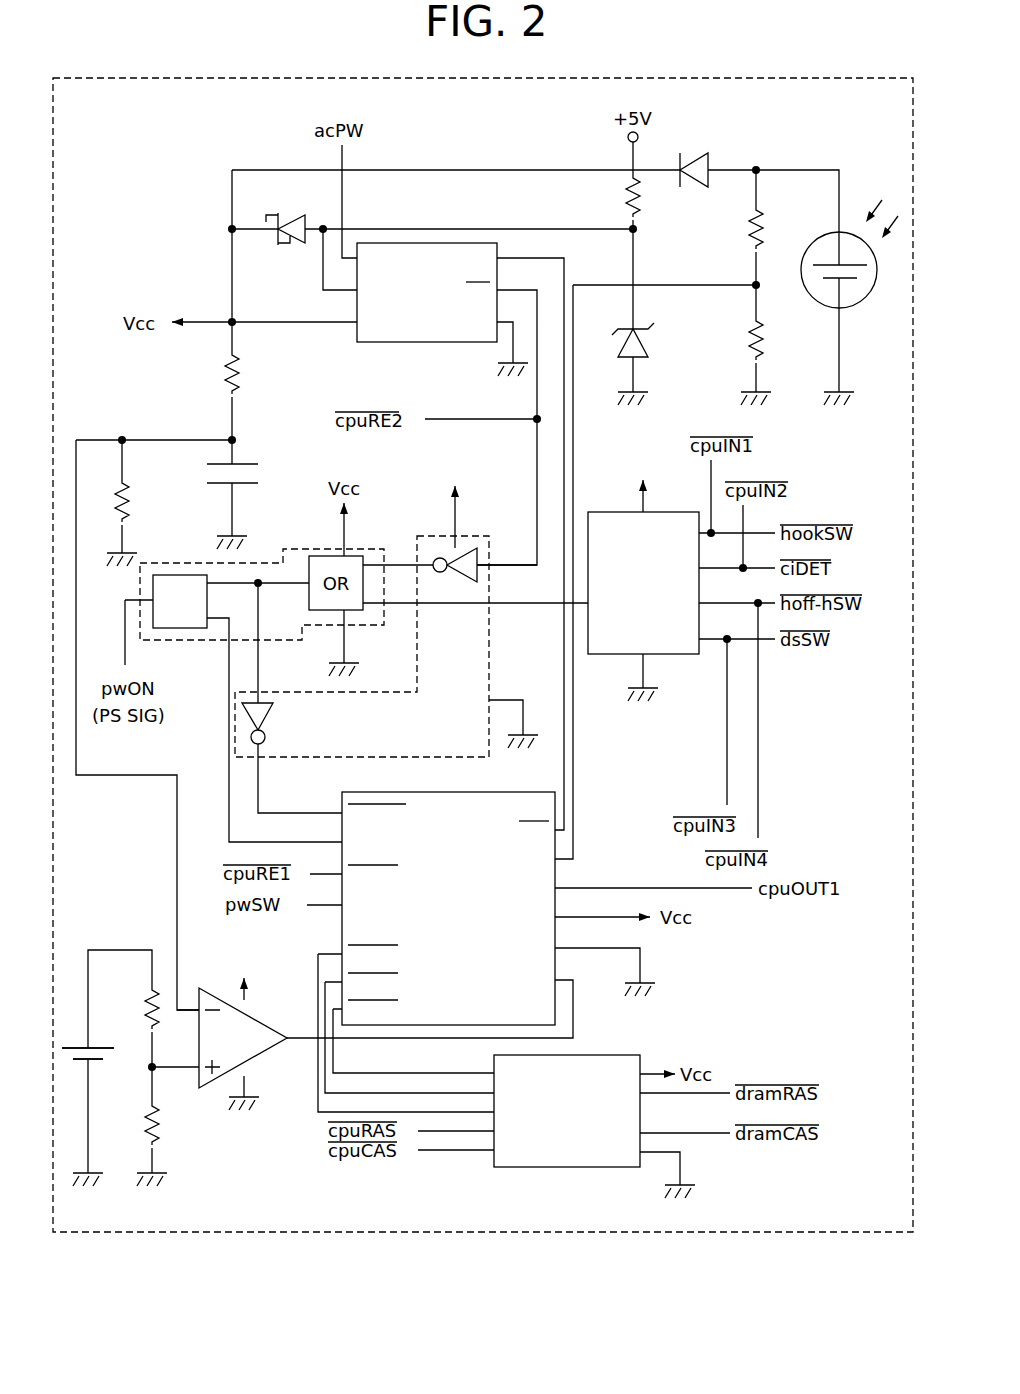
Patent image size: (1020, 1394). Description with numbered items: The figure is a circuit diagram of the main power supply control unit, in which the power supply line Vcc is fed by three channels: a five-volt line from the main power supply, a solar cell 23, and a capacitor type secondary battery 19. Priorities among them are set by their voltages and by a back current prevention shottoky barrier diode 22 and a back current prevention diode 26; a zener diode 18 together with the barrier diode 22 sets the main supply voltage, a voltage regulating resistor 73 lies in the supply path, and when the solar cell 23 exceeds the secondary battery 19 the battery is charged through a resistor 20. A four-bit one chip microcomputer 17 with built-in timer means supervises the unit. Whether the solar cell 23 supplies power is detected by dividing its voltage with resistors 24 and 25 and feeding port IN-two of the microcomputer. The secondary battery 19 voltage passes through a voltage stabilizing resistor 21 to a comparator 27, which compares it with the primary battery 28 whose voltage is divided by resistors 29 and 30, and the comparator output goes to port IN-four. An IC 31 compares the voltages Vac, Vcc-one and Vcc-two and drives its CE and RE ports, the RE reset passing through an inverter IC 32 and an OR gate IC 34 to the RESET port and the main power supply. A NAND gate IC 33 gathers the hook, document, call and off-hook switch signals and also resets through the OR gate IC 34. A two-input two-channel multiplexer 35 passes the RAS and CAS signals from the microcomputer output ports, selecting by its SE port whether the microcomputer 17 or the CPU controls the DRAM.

The 4-bit one chip microcomputer 17 is at (558, 876).
The zener diode 18 is at (650, 352).
The capacitor type secondary battery 19 is at (250, 485).
The resistor 20 is at (225, 383).
The voltage stabilizing resistor 21 is at (130, 518).
The back current prevention shottoky barrier diode 22 is at (296, 216).
The solar cell 23 is at (862, 303).
The resistor 24 is at (748, 231).
The resistor 25 is at (765, 358).
The back current prevention diode 26 is at (693, 152).
The comparator 27 is at (275, 1048).
The primary battery 28 is at (112, 1050).
The resistor 29 is at (140, 1012).
The resistor 30 is at (160, 1135).
The IC 31 is at (458, 343).
The inverter IC 32 is at (489, 613).
The NAND gate IC 33 is at (600, 512).
The OR gate IC 34 is at (203, 640).
The 2-input 2-channel multiplexer 35 is at (545, 1167).
The voltage regulating resistor 73 is at (628, 199).